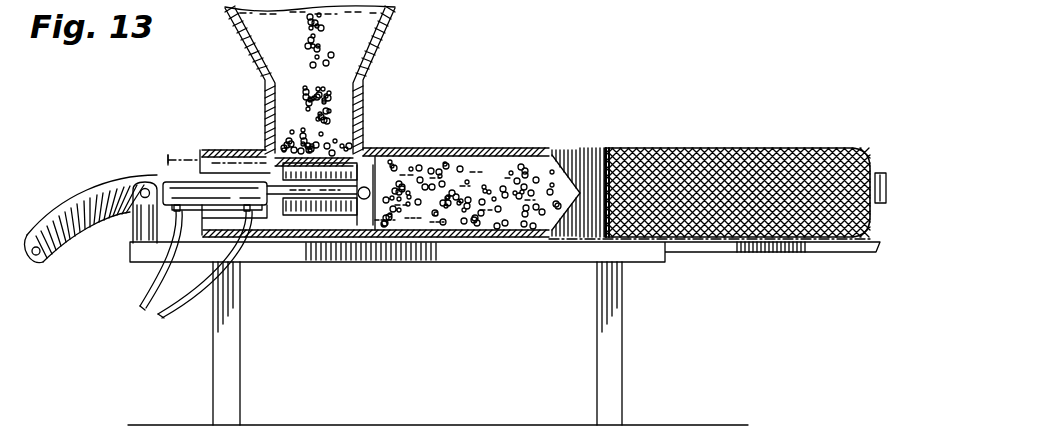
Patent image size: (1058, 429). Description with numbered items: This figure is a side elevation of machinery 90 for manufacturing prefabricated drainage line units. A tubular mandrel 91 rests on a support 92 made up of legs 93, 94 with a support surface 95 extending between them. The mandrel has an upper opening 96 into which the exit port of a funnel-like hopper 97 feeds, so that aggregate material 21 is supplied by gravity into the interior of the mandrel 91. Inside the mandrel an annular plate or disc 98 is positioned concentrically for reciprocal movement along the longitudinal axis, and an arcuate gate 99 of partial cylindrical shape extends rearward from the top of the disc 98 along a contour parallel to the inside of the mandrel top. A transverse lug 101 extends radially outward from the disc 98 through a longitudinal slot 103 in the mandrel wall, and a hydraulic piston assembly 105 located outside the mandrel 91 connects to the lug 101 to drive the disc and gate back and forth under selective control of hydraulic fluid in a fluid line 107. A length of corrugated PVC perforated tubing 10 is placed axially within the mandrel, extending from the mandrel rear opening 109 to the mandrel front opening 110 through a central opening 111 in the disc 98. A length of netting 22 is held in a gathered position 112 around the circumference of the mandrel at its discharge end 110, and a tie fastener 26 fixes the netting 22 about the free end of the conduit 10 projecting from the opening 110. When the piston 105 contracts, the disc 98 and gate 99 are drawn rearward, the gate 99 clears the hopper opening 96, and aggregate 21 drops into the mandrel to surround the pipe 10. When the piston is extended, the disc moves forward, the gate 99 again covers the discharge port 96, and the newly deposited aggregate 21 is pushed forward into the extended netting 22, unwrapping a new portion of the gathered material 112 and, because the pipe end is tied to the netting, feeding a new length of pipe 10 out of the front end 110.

The corrugated PVC perforated tubing 10 is at (50, 263).
The aggregate material 21 is at (328, 85).
The netting 22 is at (790, 147).
The tie fastener 26 is at (880, 172).
The machinery 90 is at (588, 91).
The tubular mandrel 91 is at (422, 148).
The support 92 is at (622, 300).
The leg 93 is at (243, 373).
The leg 94 is at (623, 403).
The support surface 95 is at (438, 260).
The upper opening 96 is at (372, 148).
The funnel-like hopper 97 is at (381, 40).
The annular plate or disc 98 is at (336, 232).
The arcuate gate 99 is at (168, 160).
The transverse member or lug 101 is at (353, 220).
The longitudinal slot 103 is at (277, 233).
The hydraulic piston assembly 105 is at (190, 240).
The fluid line 107 is at (157, 297).
The mandrel rear opening 109 is at (207, 147).
The mandrel front opening 110 is at (610, 147).
The central opening 111 is at (380, 222).
The gathered position 112 is at (573, 145).